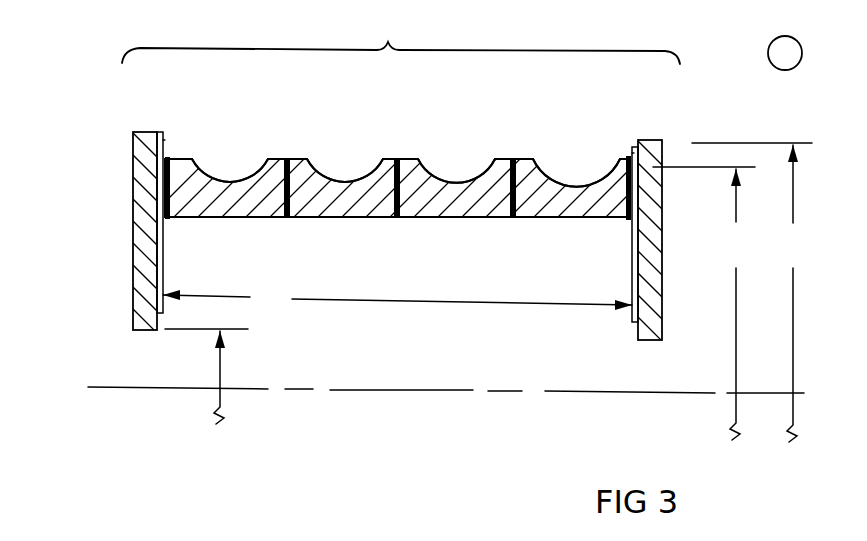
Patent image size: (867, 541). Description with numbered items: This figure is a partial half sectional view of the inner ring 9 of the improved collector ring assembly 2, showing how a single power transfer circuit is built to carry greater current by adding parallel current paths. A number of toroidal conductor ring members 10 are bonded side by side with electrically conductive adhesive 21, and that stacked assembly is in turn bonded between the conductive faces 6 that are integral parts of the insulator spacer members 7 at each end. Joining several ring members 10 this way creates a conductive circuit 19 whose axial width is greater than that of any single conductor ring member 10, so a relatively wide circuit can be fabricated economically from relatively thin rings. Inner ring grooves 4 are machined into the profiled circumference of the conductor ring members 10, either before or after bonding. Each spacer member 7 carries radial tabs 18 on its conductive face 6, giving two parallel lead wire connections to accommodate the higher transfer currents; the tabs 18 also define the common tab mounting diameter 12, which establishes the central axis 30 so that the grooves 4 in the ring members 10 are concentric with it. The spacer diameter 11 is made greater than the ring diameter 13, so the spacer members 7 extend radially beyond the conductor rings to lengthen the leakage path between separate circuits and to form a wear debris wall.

The collector ring assembly 2 is at (401, 37).
The inner ring grooves 4 is at (548, 180).
The conductive faces 6 is at (167, 142).
The insulator spacer member 7 is at (146, 142).
The inner ring 9 is at (785, 53).
The conductor ring members 10 is at (367, 207).
The spacer diameter 11 is at (752, 292).
The common tab mounting diameter 12 is at (206, 376).
The ring diameter 13 is at (704, 303).
The radial tabs 18 is at (145, 252).
The conductive circuit 19 is at (397, 299).
The electrically conductive adhesive 21 is at (257, 202).
The central axis 30 is at (382, 391).